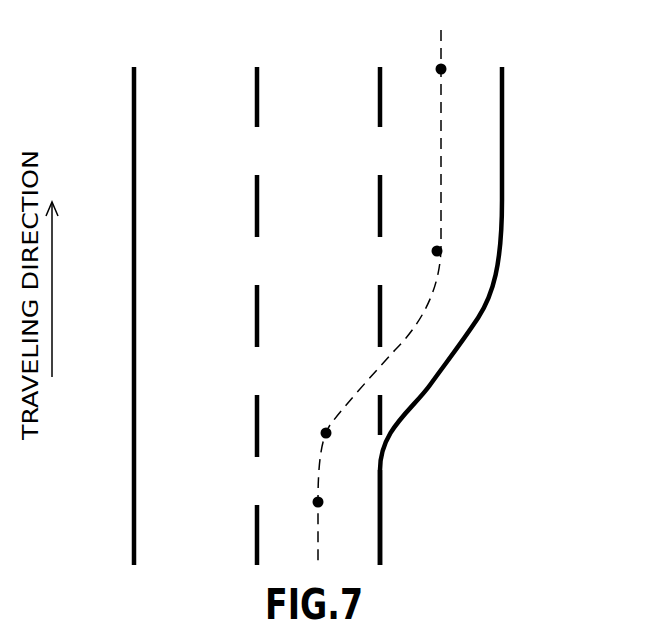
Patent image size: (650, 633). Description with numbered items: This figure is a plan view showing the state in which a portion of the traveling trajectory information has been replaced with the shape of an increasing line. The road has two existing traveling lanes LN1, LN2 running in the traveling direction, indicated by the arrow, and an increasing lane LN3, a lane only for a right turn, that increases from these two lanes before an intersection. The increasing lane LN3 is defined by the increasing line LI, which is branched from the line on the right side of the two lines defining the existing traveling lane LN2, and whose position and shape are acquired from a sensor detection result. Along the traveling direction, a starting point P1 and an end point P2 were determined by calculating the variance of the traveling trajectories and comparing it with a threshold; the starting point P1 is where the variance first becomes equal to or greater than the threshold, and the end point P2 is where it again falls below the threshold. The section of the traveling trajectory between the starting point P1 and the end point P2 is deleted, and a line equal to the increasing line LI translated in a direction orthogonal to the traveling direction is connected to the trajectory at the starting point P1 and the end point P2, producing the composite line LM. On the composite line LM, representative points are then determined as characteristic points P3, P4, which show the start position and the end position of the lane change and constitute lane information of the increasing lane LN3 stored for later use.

The traveling lane LN1 is at (195, 89).
The traveling lane LN2 is at (315, 89).
The increasing lane LN3 is at (405, 89).
The increasing line LI is at (479, 313).
The composite line LM is at (442, 168).
The starting point P1 is at (324, 500).
The end point P2 is at (446, 68).
The characteristic point P3 is at (332, 432).
The characteristic point P4 is at (443, 250).